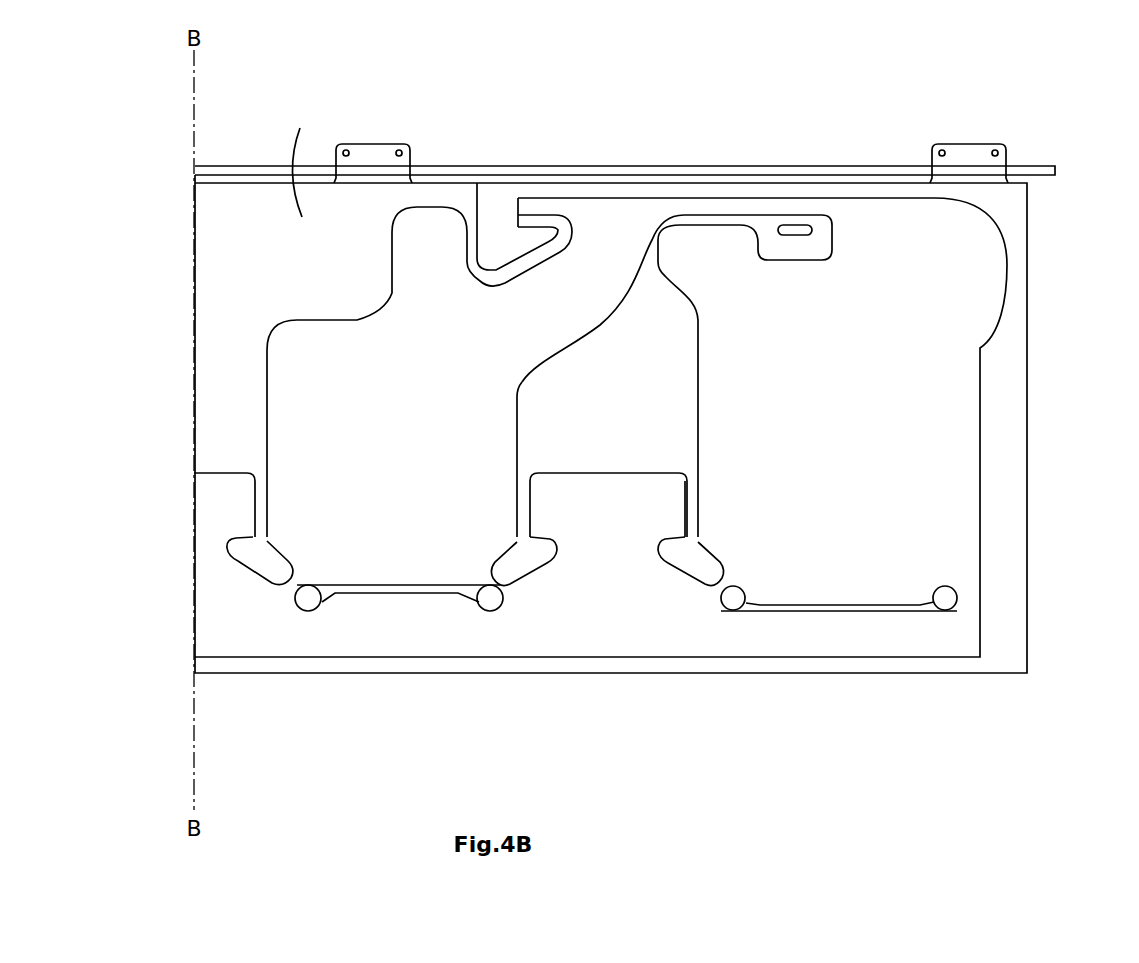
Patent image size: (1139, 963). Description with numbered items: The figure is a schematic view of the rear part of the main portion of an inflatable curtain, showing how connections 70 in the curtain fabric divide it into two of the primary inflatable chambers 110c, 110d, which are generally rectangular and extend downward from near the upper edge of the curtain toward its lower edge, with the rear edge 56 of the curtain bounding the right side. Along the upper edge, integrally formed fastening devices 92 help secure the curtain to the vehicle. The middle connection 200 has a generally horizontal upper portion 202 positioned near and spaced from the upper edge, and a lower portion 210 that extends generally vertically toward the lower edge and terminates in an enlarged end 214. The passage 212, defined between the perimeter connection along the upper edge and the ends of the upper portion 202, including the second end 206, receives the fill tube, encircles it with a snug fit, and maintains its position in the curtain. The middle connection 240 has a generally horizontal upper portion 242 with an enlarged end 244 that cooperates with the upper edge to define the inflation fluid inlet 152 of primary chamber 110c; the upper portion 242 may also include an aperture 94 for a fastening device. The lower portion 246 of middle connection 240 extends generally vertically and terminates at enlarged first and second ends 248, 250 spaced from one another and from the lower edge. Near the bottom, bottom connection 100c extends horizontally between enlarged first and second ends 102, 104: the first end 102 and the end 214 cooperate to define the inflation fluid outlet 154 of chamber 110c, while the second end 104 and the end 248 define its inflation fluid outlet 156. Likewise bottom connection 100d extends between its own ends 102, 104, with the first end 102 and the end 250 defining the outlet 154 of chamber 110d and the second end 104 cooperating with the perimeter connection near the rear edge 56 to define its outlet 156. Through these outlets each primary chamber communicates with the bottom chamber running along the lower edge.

The rear edge 56 is at (1030, 342).
The connections 70 is at (522, 382).
The fastening device 92 is at (373, 158).
The aperture 94 is at (800, 236).
The bottom connection 100c is at (410, 593).
The bottom connection 100d is at (887, 612).
The first end 102 is at (310, 597).
The second end 104 is at (480, 611).
The primary inflatable chamber 110c is at (477, 372).
The primary inflatable chamber 110d is at (767, 399).
The inflation fluid inlet 152 is at (605, 242).
The inflation fluid outlet 154 is at (288, 585).
The inflation fluid outlet 156 is at (500, 585).
The middle connection 200 is at (300, 154).
The upper portion 202 is at (270, 217).
The second end 206 is at (540, 221).
The lower portion 210 is at (226, 393).
The passage 212 is at (523, 208).
The second end 214 is at (265, 558).
The middle connection 240 is at (727, 219).
The upper portion 242 is at (703, 218).
The enlarged end 244 is at (783, 247).
The lower portion 246 is at (652, 390).
The first end 248 is at (528, 553).
The second end 250 is at (705, 560).